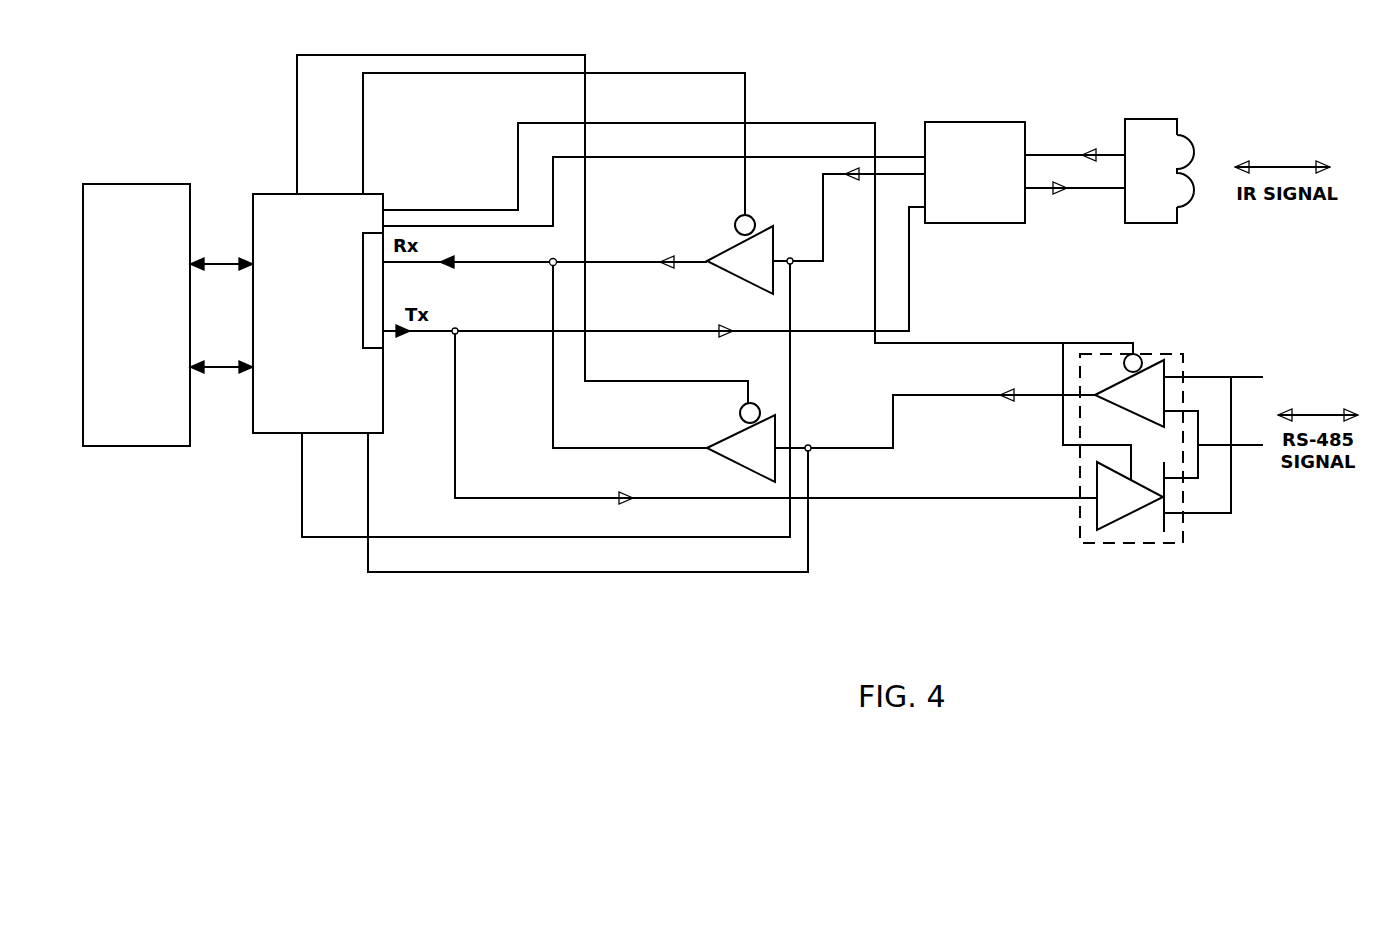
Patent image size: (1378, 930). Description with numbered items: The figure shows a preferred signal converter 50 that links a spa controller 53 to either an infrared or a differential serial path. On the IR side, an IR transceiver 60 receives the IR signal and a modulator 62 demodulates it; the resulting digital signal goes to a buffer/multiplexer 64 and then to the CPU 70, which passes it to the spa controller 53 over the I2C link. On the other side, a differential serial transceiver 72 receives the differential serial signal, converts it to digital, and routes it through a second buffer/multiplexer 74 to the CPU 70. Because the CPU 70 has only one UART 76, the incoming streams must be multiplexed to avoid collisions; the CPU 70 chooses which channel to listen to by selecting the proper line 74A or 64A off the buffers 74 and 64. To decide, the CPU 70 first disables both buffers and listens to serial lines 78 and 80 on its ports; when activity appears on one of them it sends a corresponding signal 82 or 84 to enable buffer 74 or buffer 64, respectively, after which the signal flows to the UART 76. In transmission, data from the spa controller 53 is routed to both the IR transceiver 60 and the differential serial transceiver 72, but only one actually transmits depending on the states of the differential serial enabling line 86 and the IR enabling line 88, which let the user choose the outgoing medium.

The signal converter 50 is at (597, 603).
The spa controller 53 is at (178, 447).
The IR transceiver 60 is at (1149, 173).
The modulator 62 is at (975, 173).
The buffer/multiplexer 64 is at (768, 225).
The line 64A is at (630, 261).
The CPU 70 is at (263, 193).
The RS-485 transceiver 72 is at (1147, 353).
The buffer/multiplexer 74 is at (776, 422).
The line 74A is at (650, 447).
The UART 76 is at (383, 287).
The serial line 78 is at (720, 570).
The serial line 80 is at (777, 535).
The signal 82 is at (297, 88).
The signal 84 is at (665, 72).
The RS-485 enabling line 86 is at (484, 208).
The IR enabling line 88 is at (597, 158).